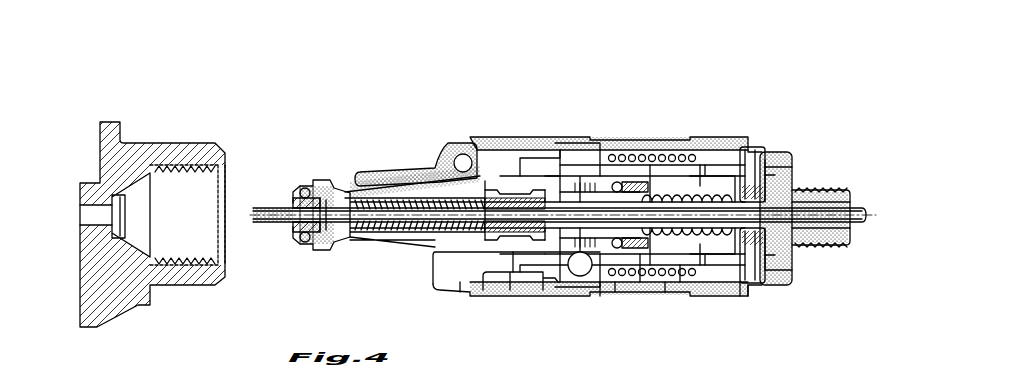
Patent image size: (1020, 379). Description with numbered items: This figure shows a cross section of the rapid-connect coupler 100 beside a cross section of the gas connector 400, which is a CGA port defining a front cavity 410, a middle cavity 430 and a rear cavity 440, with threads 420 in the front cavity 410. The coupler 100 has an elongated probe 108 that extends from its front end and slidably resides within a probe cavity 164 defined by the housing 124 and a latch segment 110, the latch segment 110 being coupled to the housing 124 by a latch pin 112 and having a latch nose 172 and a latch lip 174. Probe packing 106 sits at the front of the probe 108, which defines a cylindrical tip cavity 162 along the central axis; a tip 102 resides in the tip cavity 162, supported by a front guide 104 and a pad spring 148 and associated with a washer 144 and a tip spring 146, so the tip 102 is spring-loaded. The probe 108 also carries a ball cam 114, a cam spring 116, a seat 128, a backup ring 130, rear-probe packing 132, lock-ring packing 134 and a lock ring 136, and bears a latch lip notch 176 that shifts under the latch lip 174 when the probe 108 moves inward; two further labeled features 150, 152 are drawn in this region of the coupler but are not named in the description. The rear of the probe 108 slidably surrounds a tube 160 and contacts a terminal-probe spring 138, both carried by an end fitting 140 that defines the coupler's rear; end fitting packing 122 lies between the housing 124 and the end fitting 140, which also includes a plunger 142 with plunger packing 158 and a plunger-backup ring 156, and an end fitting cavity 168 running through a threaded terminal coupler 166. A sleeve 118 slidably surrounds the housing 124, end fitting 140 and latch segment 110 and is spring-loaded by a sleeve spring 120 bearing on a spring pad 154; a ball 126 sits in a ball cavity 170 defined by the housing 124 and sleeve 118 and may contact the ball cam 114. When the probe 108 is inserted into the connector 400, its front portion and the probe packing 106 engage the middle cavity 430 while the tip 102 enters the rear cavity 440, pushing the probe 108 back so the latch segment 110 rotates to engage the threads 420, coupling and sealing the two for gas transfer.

The rapid-connect coupler 100 is at (552, 176).
The tip 102 is at (260, 206).
The front guide 104 is at (290, 198).
The probe packing 106 is at (302, 188).
The probe 108 is at (316, 196).
The latch segment 110 is at (393, 186).
The latch pin 112 is at (458, 142).
The ball cam 114 is at (556, 160).
The cam spring 116 is at (586, 150).
The sleeve 118 is at (642, 150).
The sleeve spring 120 is at (666, 150).
The end fitting packing 122 is at (706, 150).
The housing 124 is at (438, 146).
The ball 126 is at (576, 280).
The seat 128 is at (602, 296).
The backup ring 130 is at (618, 292).
The rear-probe packing 132 is at (642, 282).
The lock-ring packing 134 is at (667, 292).
The lock ring 136 is at (682, 282).
The terminal-probe spring 138 is at (741, 294).
The end fitting 140 is at (782, 292).
The plunger 142 is at (780, 141).
The washer 144 is at (350, 238).
The tip spring 146 is at (380, 233).
The pad spring 148 is at (458, 292).
The groove 150 is at (490, 290).
The shoulder 152 is at (500, 282).
The spring pad 154 is at (738, 158).
The plunger-backup ring 156 is at (790, 160).
The plunger packing 158 is at (792, 172).
The tube 160 is at (788, 282).
The tip cavity 162 is at (305, 238).
The probe cavity 164 is at (430, 251).
The terminal coupler 166 is at (832, 248).
The end fitting cavity 168 is at (799, 209).
The ball cavity 170 is at (522, 150).
The latch nose 172 is at (358, 173).
The latch lip 174 is at (532, 162).
The latch lip notch 176 is at (500, 152).
The gas connector 400 is at (145, 200).
The front cavity 410 is at (229, 251).
The threads 420 is at (182, 174).
The middle cavity 430 is at (146, 222).
The rear cavity 440 is at (69, 218).